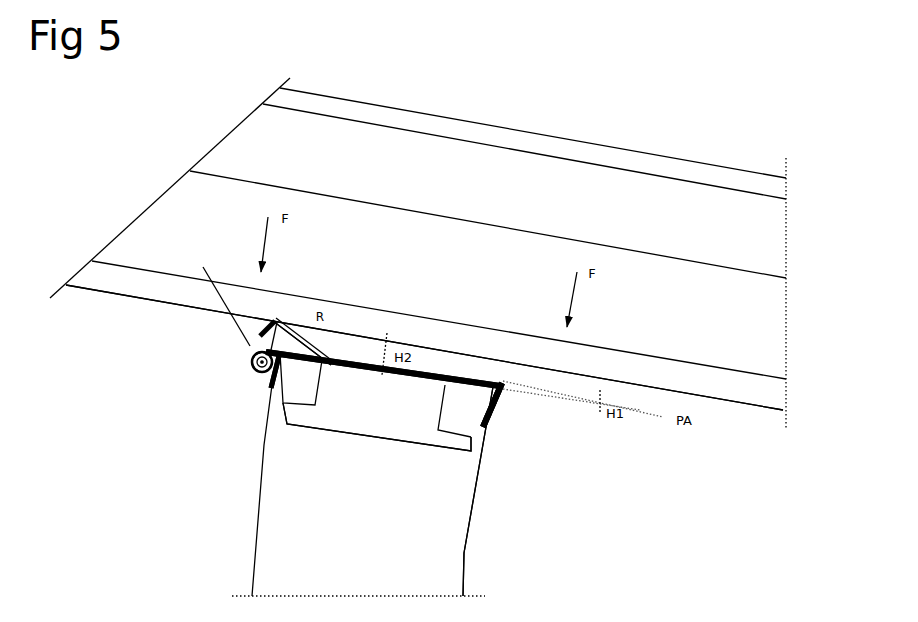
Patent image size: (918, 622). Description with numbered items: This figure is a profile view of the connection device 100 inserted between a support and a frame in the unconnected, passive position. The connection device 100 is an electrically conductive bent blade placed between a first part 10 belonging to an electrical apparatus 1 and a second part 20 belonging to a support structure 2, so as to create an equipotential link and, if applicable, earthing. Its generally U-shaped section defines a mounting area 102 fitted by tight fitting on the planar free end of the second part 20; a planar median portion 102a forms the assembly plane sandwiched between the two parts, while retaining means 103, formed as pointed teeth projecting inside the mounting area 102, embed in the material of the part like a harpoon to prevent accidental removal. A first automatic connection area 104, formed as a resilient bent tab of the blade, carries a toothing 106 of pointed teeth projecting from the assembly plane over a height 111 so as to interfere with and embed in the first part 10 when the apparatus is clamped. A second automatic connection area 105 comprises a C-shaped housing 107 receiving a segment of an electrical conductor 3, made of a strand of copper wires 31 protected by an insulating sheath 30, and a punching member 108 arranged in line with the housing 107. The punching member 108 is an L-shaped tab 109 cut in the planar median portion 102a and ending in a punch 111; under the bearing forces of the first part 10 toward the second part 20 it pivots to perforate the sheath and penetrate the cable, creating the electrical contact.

The electrical apparatus 1 is at (763, 418).
The support structure 2 is at (470, 552).
The electrical conductor 3 is at (248, 348).
The first part 10 is at (446, 253).
The second part 20 is at (372, 530).
The insulating sheath 30 is at (257, 377).
The strand of copper wires 31 is at (266, 380).
The connection device 100 is at (575, 433).
The mounting area 102 is at (452, 422).
The planar median portion 102a is at (432, 378).
The retaining means 103 is at (293, 425).
The first automatic connection area 104 is at (510, 365).
The second automatic connection area 105 is at (223, 358).
The toothing 106 is at (507, 393).
The housing 107 is at (248, 365).
The punching member 108 is at (290, 318).
The L-shaped tab 109 is at (293, 345).
The punch 111 is at (231, 295).